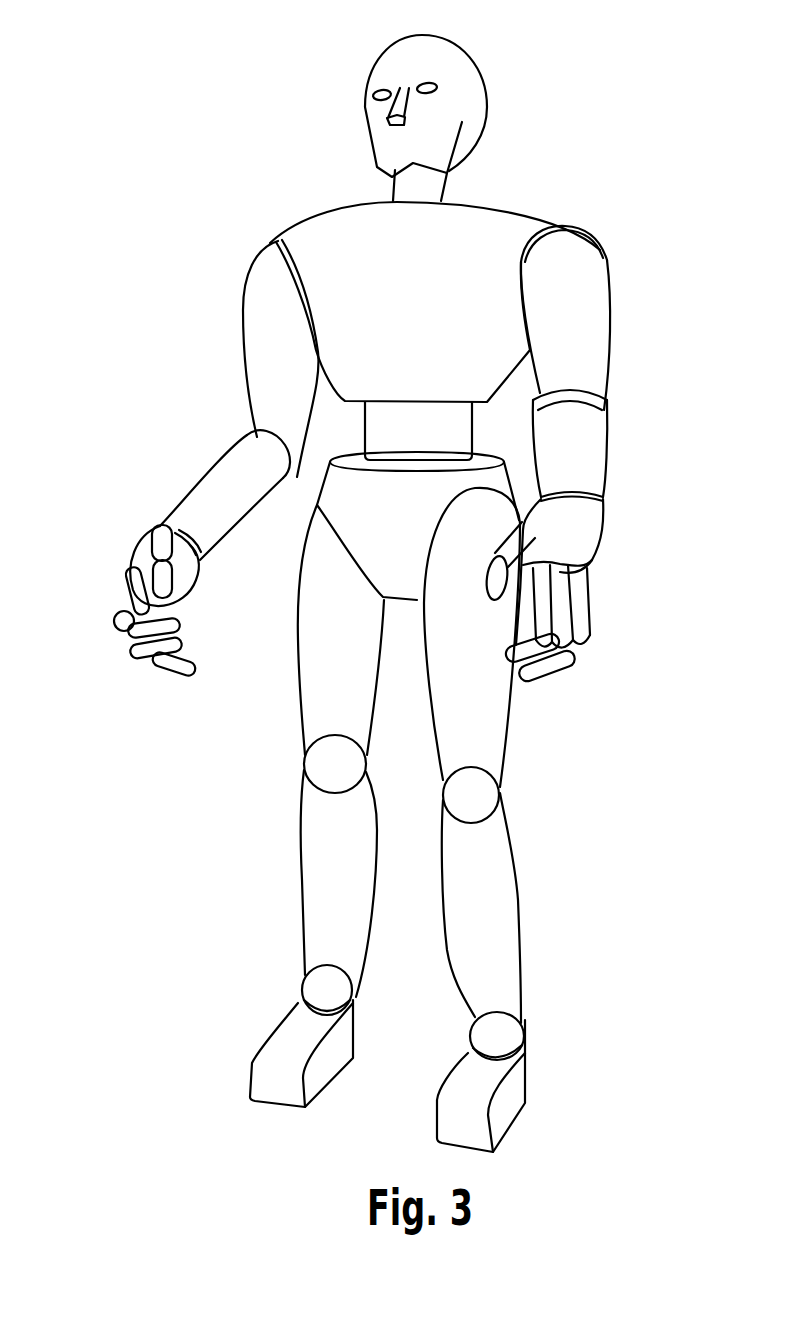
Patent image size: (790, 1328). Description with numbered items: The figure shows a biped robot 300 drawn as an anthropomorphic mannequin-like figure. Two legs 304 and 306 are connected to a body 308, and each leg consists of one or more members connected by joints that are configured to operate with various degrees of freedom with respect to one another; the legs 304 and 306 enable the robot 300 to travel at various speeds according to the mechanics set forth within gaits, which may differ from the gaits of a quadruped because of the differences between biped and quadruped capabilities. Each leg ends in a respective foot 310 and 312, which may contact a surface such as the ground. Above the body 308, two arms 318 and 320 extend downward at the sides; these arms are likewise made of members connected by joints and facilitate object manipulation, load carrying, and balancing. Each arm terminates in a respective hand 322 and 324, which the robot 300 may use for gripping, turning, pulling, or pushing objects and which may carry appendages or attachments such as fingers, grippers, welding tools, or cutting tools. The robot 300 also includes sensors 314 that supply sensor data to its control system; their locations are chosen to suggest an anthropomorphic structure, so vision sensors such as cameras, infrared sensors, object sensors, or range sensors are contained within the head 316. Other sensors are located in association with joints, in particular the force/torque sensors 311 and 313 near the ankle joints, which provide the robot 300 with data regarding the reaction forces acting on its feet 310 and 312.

The robot 300 is at (635, 138).
The head 316 is at (476, 38).
The sensor 314 is at (381, 92).
The body 308 is at (294, 496).
The arm 320 is at (165, 481).
The hand 324 is at (130, 557).
The arm 318 is at (641, 455).
The hand 322 is at (603, 553).
The leg 306 is at (273, 828).
The force/torque sensor 313 is at (320, 992).
The foot 312 is at (278, 1027).
The leg 304 is at (528, 850).
The force/torque sensor 311 is at (505, 1038).
The foot 310 is at (527, 1084).